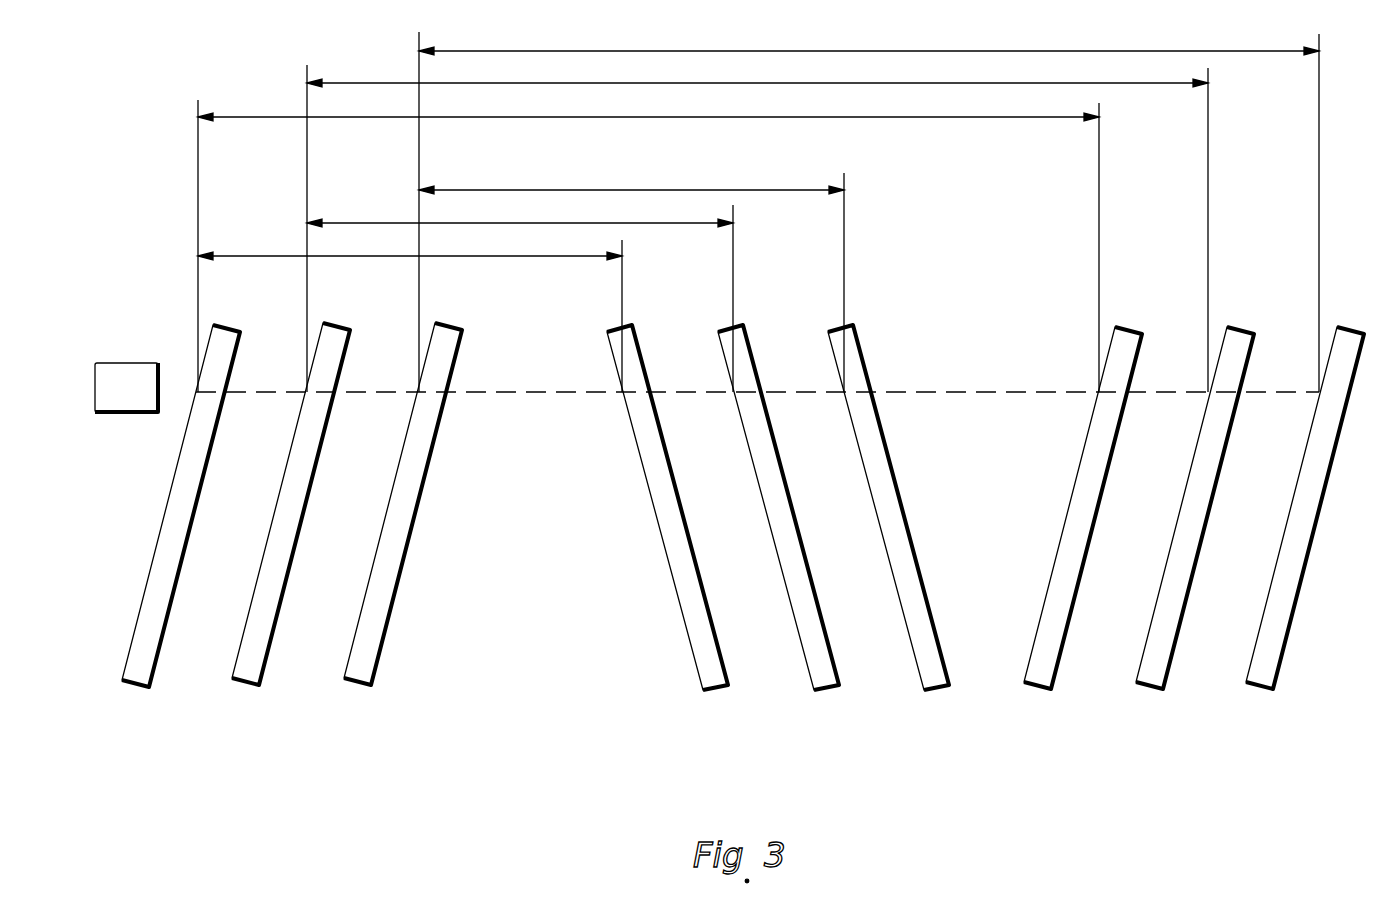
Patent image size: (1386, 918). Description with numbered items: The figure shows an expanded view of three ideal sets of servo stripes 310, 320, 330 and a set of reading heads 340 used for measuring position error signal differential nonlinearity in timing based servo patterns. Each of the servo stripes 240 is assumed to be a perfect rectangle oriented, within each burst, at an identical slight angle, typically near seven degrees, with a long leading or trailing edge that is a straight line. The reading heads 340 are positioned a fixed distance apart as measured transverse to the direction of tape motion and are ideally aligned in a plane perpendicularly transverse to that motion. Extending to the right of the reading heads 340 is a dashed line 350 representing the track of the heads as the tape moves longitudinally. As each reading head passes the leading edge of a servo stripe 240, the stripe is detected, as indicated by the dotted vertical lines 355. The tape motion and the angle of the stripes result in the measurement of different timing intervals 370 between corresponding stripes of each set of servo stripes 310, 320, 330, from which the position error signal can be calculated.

The servo stripe 240 is at (397, 580).
The first set of servo stripes 310 is at (292, 551).
The second set of servo stripes 320 is at (952, 718).
The third set of servo stripes 330 is at (1272, 718).
The reading heads 340 is at (95, 383).
The dashed line 350 is at (271, 393).
The dotted vertical lines 355 is at (198, 187).
The timing intervals 370 is at (860, 40).